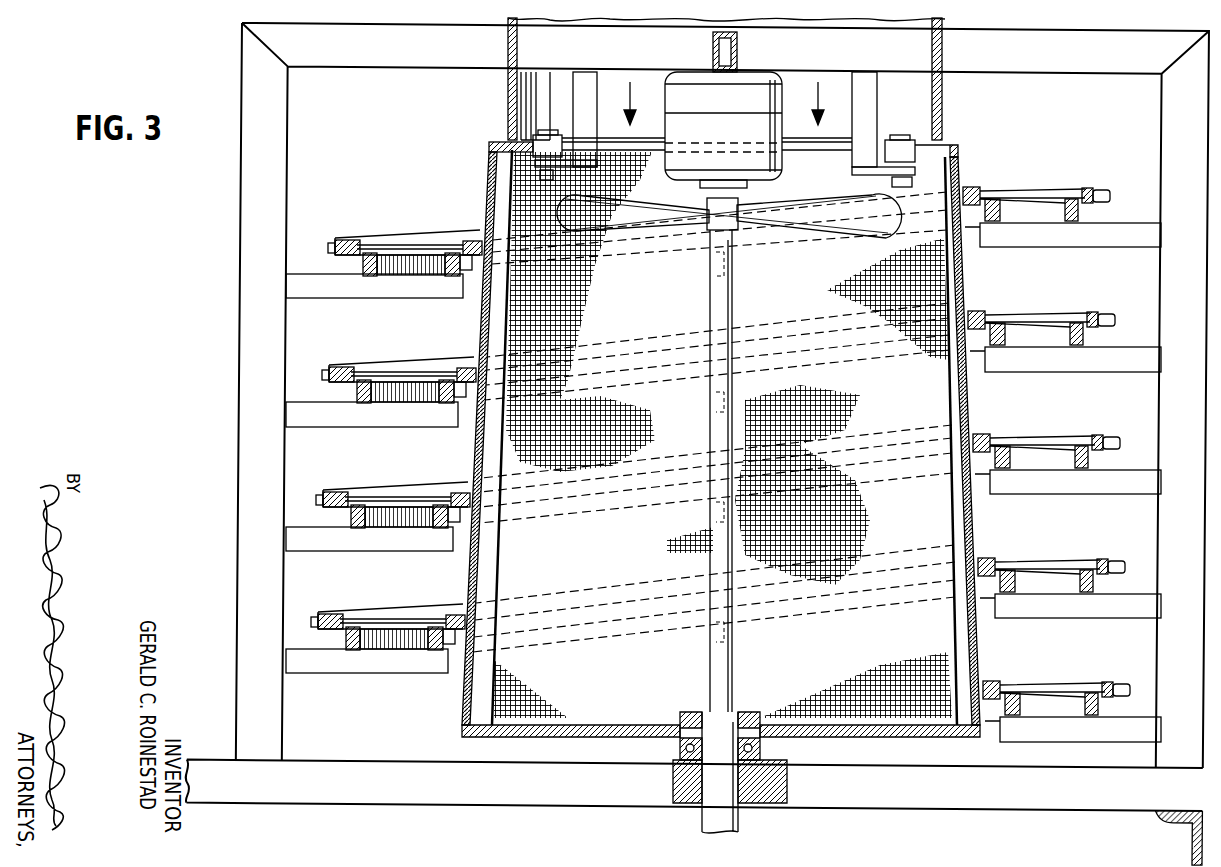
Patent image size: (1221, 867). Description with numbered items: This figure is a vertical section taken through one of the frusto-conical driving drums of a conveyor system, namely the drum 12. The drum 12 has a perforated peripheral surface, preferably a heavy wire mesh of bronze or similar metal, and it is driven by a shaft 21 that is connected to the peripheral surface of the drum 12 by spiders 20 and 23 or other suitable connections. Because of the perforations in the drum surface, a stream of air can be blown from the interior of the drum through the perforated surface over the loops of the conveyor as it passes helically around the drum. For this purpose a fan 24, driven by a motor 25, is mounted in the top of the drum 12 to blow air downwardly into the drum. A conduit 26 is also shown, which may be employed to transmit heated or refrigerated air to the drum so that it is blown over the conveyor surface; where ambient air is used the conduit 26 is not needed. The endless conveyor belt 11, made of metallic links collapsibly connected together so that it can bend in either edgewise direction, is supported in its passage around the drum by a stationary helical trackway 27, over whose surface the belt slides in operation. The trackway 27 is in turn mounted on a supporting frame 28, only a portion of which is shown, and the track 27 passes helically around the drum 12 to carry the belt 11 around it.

The endless conveyor belt 11 is at (1100, 190).
The driving drum 12 is at (958, 167).
The spider 20 is at (562, 730).
The shaft 21 is at (740, 815).
The spider 23 is at (803, 150).
The fan 24 is at (846, 222).
The motor 25 is at (770, 100).
The conduit 26 is at (942, 102).
The stationary helical trackway 27 is at (350, 270).
The supporting frame 28 is at (250, 341).